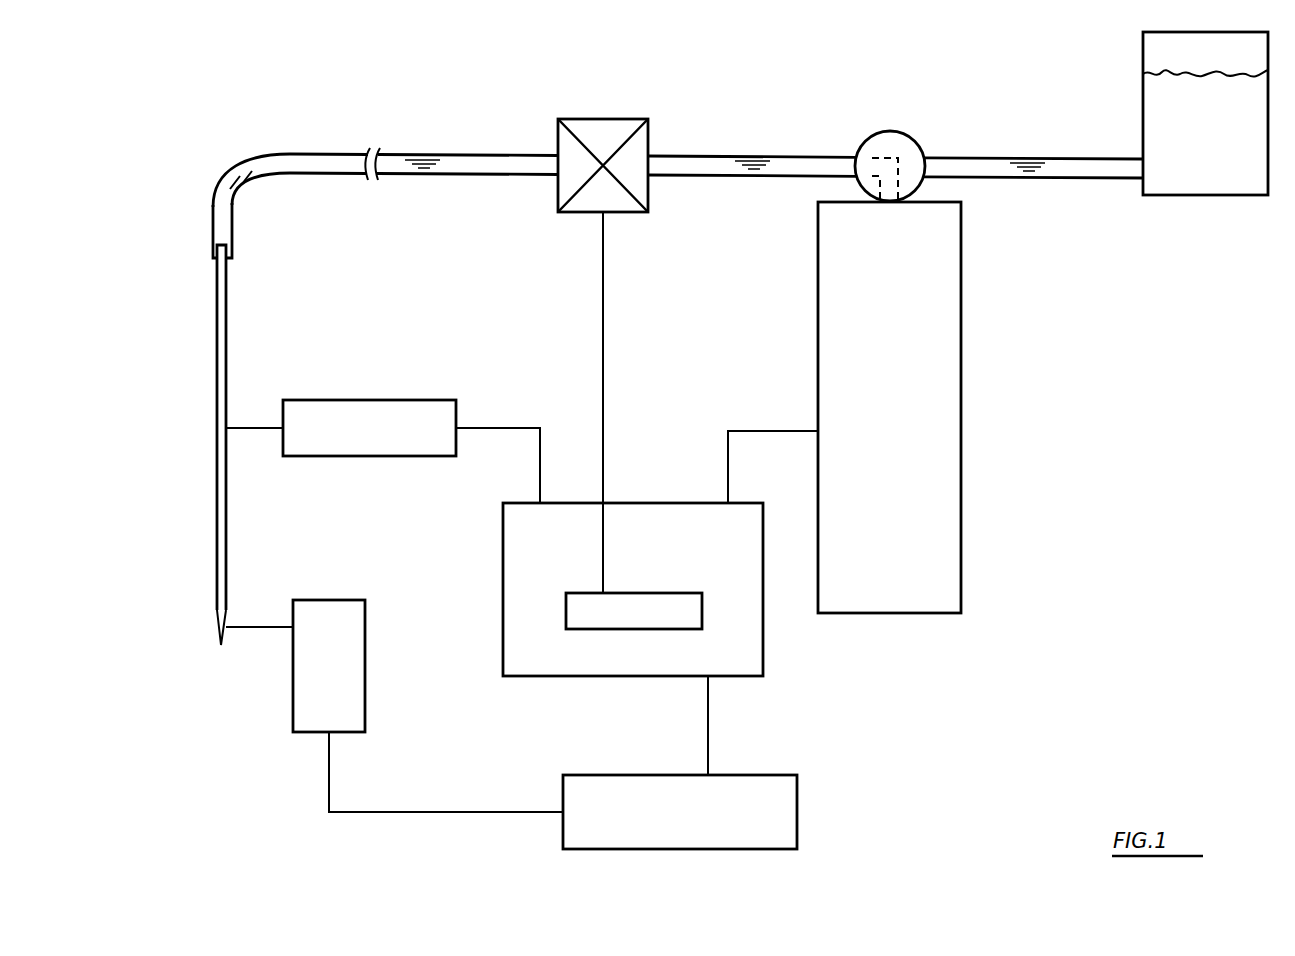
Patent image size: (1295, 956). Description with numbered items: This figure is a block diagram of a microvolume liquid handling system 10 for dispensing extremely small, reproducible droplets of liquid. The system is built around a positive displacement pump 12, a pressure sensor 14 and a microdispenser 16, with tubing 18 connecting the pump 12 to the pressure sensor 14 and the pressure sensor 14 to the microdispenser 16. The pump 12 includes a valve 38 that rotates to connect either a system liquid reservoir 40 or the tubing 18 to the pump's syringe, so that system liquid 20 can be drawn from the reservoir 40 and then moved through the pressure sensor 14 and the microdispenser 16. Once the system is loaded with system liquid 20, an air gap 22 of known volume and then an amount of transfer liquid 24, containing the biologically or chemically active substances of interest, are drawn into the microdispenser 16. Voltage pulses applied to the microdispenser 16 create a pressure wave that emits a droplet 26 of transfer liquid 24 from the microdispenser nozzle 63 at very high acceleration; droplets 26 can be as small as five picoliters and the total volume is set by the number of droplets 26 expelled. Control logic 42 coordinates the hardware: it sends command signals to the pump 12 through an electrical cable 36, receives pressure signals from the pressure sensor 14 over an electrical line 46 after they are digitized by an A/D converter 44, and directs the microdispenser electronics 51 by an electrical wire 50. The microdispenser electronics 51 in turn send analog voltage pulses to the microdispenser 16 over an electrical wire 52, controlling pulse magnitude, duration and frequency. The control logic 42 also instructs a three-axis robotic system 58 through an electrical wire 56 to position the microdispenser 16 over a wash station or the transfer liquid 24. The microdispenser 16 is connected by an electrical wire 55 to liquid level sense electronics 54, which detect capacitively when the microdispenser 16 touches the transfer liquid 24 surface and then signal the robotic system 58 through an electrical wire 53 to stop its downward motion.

The microvolume liquid handling system 10 is at (1158, 476).
The positive displacement pump 12 is at (880, 613).
The pressure sensor 14 is at (572, 212).
The microdispenser 16 is at (228, 338).
The tubing 18 is at (482, 154).
The system liquid 20 is at (263, 166).
The air gap 22 is at (240, 174).
The transfer liquid 24 is at (230, 222).
The droplet 26 is at (221, 661).
The electrical cable 36 is at (787, 431).
The valve 38 is at (889, 131).
The system liquid reservoir 40 is at (1173, 195).
The control logic 42 is at (595, 676).
The A/D converter 44 is at (672, 629).
The electrical line 46 is at (603, 350).
The electrical wire 50 is at (470, 428).
The microdispenser electronics 51 is at (343, 456).
The electrical wire 52 is at (257, 428).
The electrical wire 53 is at (370, 812).
The liquid level sense electronics 54 is at (293, 707).
The electrical wire 55 is at (265, 627).
The electrical wire 56 is at (708, 723).
The 3-axis robotic system 58 is at (797, 812).
The microdispenser nozzle 63 is at (220, 640).